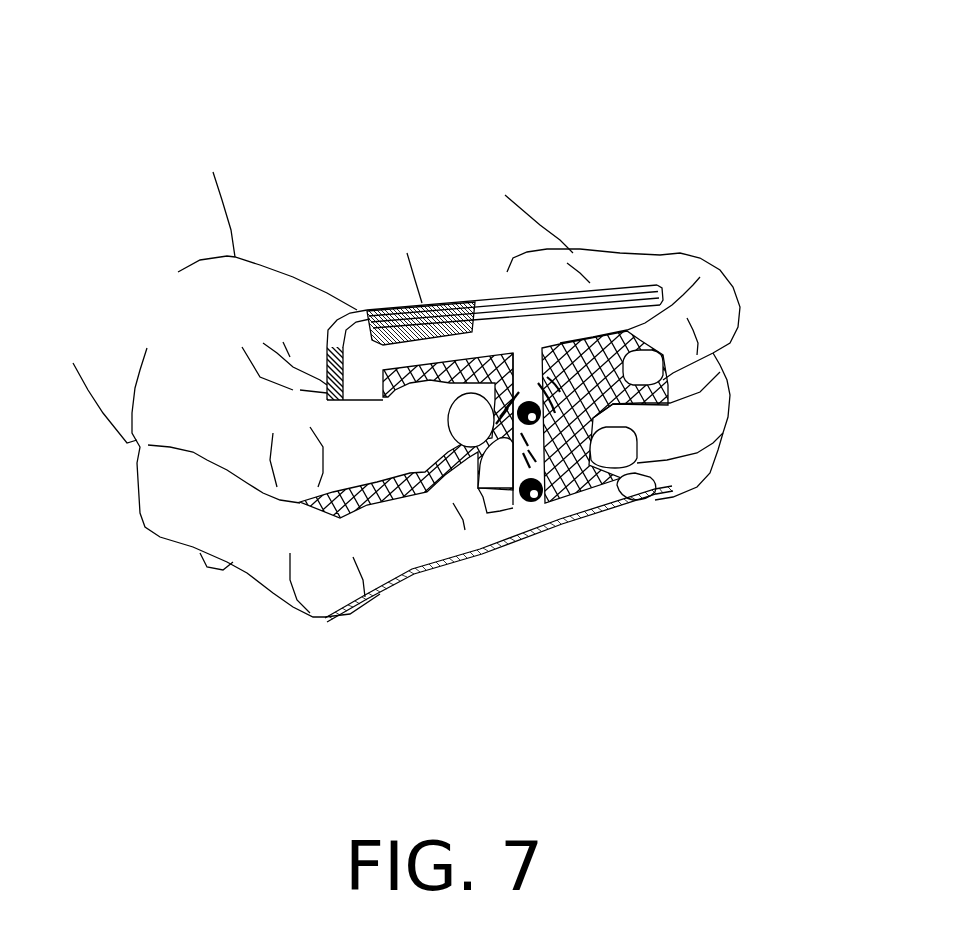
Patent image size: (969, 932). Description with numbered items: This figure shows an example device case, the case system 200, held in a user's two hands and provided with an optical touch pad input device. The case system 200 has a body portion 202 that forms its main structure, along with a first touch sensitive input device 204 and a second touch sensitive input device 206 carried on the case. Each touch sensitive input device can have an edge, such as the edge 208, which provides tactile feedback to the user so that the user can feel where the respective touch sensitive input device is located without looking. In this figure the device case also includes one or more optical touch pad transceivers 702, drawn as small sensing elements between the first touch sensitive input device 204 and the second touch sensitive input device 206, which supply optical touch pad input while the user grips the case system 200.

The case system 200 is at (414, 43).
The body portion 202 is at (567, 320).
The first touch sensitive input device 204 is at (406, 453).
The second touch sensitive input device 206 is at (562, 506).
The edge 208 is at (513, 510).
The optical touch pad transceiver 702 is at (540, 537).